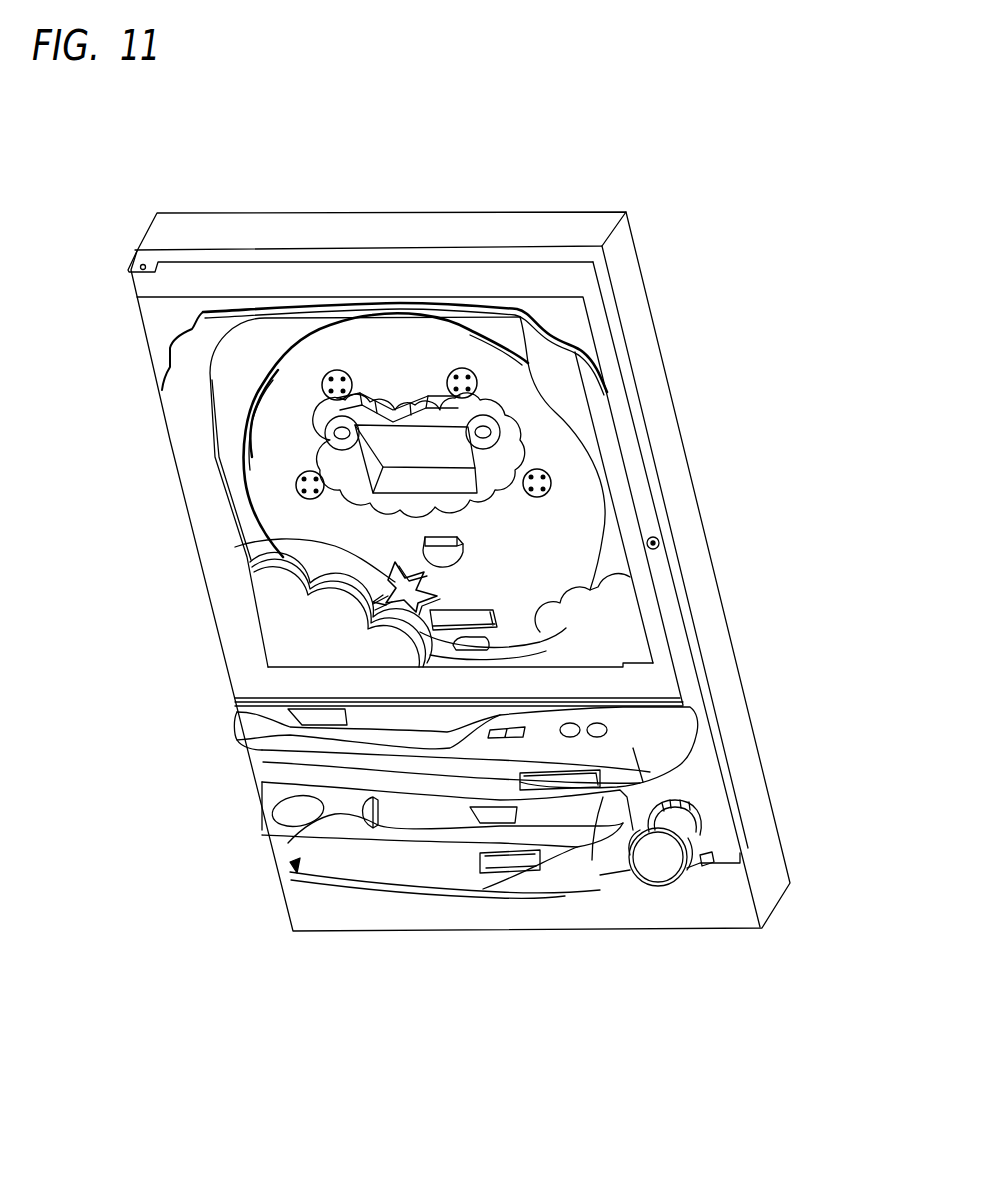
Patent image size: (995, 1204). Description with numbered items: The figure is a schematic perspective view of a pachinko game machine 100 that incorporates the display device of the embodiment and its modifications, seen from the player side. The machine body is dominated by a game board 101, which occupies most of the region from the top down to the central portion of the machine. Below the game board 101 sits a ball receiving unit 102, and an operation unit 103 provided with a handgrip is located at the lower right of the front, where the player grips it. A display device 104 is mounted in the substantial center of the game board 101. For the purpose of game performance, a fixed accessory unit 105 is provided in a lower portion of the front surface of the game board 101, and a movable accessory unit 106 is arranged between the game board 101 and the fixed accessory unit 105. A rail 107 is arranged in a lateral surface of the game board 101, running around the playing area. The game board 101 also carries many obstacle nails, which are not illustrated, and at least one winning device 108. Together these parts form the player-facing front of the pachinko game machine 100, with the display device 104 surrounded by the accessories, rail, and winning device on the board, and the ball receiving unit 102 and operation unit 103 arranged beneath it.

The pachinko game machine 100 is at (722, 956).
The game board 101 is at (572, 454).
The ball receiving unit 102 is at (288, 843).
The operation unit 103 is at (700, 828).
The display device 104 is at (403, 450).
The fixed accessory unit 105 is at (292, 627).
The movable accessory unit 106 is at (235, 547).
The rail 107 is at (250, 395).
The winning device 108 is at (463, 543).